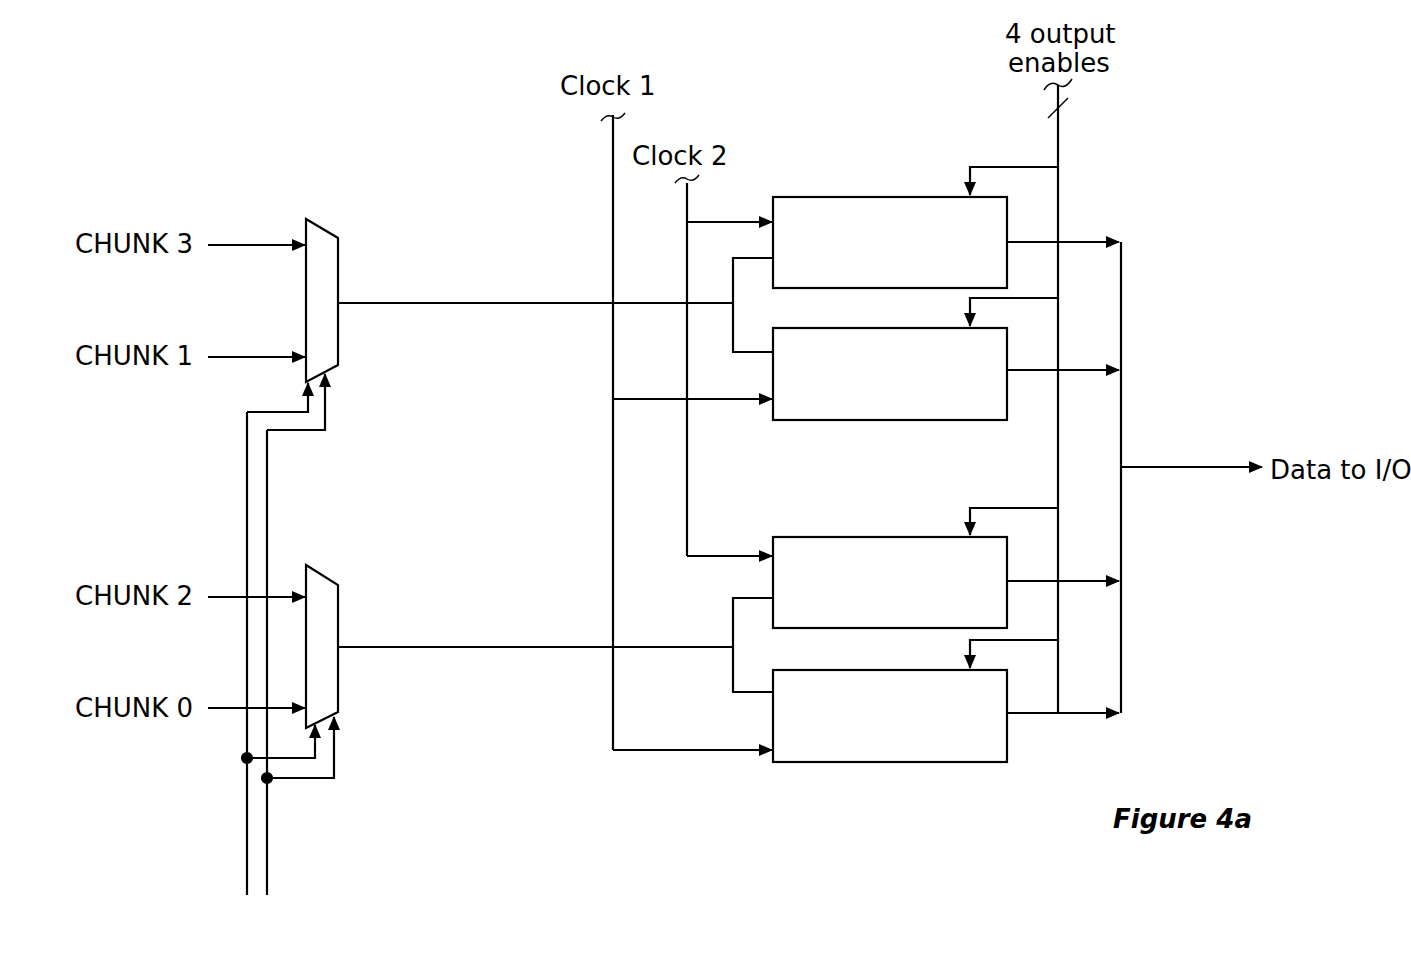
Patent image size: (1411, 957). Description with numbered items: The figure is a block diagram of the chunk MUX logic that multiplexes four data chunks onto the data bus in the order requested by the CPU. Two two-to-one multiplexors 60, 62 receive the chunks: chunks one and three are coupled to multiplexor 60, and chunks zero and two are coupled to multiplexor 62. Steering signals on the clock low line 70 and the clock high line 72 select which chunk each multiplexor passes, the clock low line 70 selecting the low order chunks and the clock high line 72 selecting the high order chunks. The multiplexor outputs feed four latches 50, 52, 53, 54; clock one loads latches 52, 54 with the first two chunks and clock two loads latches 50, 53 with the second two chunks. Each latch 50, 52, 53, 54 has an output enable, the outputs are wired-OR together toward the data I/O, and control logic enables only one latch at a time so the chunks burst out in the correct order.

The latch 50 is at (946, 242).
The latch 52 is at (946, 374).
The latch 53 is at (946, 582).
The latch 54 is at (946, 716).
The two-to-one multiplexor 60 is at (338, 262).
The two-to-one multiplexor 62 is at (338, 613).
The clock low line 70 is at (305, 634).
The clock high line 72 is at (240, 837).